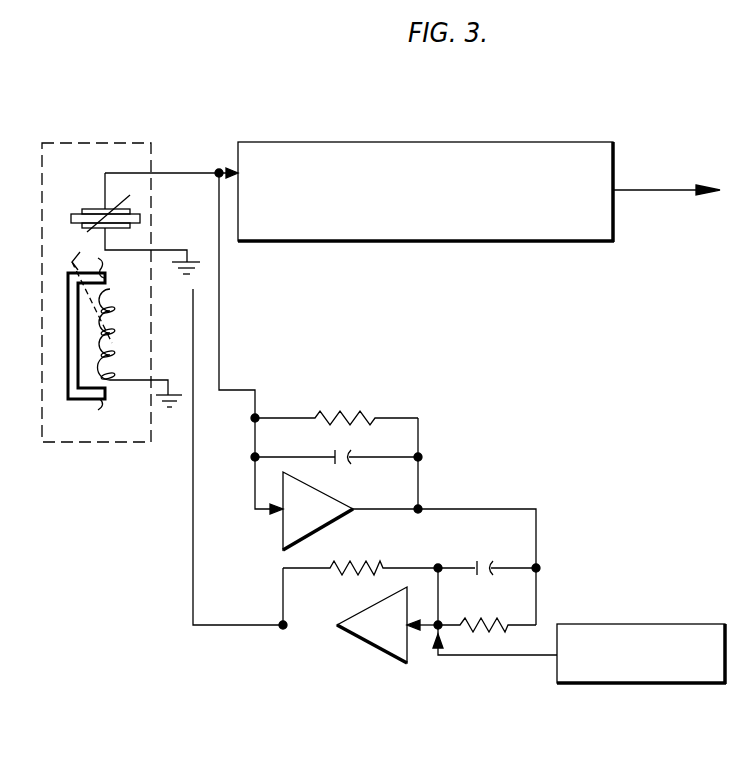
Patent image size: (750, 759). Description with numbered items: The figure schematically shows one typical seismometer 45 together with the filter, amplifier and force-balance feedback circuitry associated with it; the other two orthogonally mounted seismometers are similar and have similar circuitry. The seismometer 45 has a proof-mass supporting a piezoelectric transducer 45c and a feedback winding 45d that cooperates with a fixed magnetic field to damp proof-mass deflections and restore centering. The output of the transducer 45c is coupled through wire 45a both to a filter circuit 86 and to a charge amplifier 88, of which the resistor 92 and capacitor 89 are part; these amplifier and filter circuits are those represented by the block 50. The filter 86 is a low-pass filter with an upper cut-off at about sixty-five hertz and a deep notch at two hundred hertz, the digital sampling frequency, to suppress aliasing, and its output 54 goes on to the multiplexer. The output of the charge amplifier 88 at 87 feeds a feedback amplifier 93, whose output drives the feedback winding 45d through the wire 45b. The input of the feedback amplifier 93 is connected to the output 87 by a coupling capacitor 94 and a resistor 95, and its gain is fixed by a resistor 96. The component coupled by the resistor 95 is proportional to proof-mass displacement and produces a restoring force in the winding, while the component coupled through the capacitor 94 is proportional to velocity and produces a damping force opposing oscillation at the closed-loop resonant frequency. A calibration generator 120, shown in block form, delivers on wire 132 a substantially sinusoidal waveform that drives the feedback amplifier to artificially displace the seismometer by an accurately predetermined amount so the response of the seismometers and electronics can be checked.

The seismometer 45 is at (128, 442).
The wire 45a is at (217, 170).
The wire 45b is at (193, 553).
The piezoelectric transducer 45c is at (88, 209).
The feedback winding 45d is at (112, 345).
The amplifier and filter circuits 50 is at (437, 324).
The output 54 is at (680, 192).
The filter circuit 86 is at (445, 142).
The output of the charge amplifier 87 is at (536, 545).
The charge amplifier 88 is at (315, 525).
The capacitor 89 is at (348, 463).
The resistor 92 is at (365, 416).
The feedback amplifier 93 is at (375, 637).
The coupling capacitor 94 is at (482, 560).
The resistor 95 is at (498, 634).
The resistor 96 is at (373, 565).
The calibration generator 120 is at (655, 684).
The wire 132 is at (525, 656).